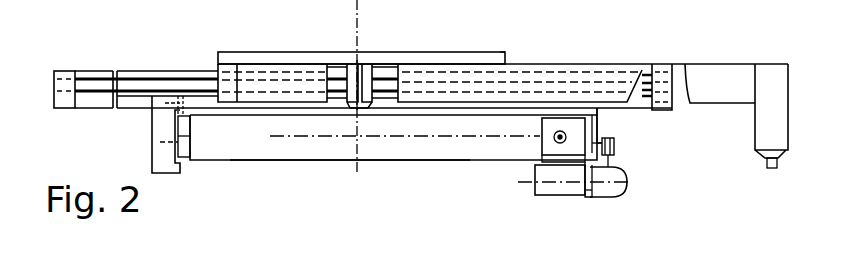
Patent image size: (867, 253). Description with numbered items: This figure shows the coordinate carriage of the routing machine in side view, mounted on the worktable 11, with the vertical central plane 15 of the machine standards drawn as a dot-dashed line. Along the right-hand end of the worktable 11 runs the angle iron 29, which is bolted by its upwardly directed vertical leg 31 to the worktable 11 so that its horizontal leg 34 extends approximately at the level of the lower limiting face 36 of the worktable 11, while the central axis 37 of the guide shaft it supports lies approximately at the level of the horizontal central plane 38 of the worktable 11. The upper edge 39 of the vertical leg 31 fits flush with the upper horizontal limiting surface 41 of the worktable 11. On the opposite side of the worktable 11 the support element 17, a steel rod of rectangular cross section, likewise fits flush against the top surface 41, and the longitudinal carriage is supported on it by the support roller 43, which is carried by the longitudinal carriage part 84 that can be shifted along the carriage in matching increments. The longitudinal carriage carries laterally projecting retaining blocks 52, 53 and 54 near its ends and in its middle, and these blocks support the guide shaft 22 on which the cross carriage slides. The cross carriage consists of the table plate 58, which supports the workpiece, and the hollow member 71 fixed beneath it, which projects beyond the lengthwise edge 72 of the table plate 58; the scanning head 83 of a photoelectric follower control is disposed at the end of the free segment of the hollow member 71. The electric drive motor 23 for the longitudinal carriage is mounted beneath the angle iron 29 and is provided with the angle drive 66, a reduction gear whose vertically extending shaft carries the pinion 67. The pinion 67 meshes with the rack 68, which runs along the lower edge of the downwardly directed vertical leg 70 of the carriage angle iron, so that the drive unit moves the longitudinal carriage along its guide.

The worktable 11 is at (317, 150).
The vertical central plane 15 is at (360, 22).
The support element 17 is at (190, 123).
The guide shaft 22 is at (131, 84).
The electric drive motor 23 is at (580, 192).
The angle iron 29 is at (580, 188).
The vertical leg 31 is at (536, 140).
The horizontal leg 34 is at (557, 158).
The lower limiting face 36 is at (470, 162).
The central axis 37 is at (564, 131).
The horizontal central plane 38 is at (436, 136).
The upper edge 39 is at (538, 115).
The upper horizontal limiting surface 41 is at (380, 112).
The support roller 43 is at (182, 88).
The retaining block 52 is at (61, 78).
The retaining block 53 is at (662, 104).
The retaining block 54 is at (352, 100).
The table plate 58 is at (289, 56).
The angle drive 66 is at (623, 183).
The pinion 67 is at (614, 150).
The rack 68 is at (598, 145).
The vertical leg 70 is at (597, 127).
The hollow member 71 is at (707, 78).
The lengthwise edge 72 is at (505, 54).
The scanning head 83 is at (771, 168).
The longitudinal carriage part 84 is at (152, 132).